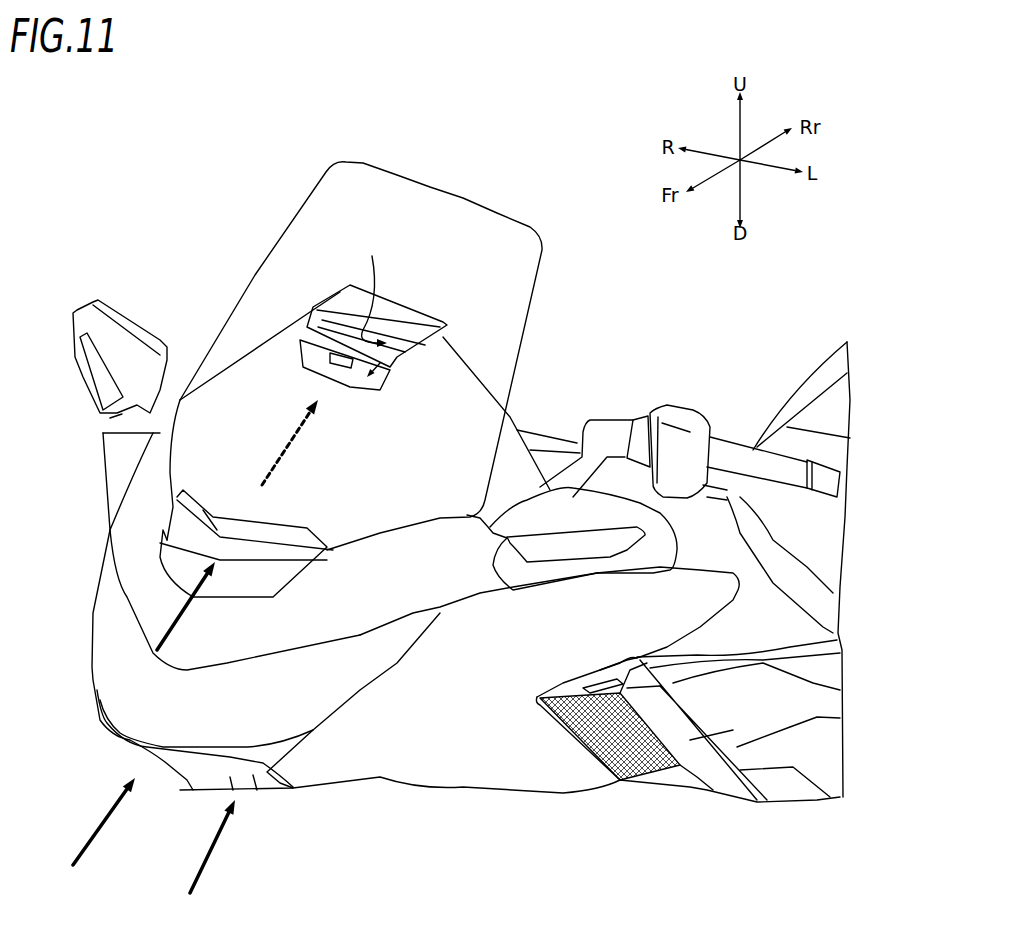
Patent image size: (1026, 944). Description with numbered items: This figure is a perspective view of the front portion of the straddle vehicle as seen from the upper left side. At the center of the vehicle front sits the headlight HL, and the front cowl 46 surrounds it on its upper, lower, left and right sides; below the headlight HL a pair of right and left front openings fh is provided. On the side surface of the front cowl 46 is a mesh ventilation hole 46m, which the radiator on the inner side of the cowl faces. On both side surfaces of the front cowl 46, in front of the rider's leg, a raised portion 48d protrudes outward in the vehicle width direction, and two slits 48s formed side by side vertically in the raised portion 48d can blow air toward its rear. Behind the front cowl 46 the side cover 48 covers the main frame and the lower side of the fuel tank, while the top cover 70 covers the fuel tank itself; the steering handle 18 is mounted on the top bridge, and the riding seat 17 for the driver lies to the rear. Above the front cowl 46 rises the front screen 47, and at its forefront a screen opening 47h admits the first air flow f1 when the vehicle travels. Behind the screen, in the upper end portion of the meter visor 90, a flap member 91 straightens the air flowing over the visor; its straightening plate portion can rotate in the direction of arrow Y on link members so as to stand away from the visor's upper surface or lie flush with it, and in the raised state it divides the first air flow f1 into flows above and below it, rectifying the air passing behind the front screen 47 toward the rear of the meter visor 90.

The front screen 47 is at (280, 263).
The screen opening 47h is at (160, 545).
The flap member 91 is at (417, 303).
The meter visor 90 is at (457, 390).
The top cover 70 is at (565, 435).
The steering handle 18 is at (737, 457).
The riding seat 17 is at (825, 408).
The headlight HL is at (127, 667).
The front cowl 46 is at (402, 757).
The mesh ventilation hole 46m is at (617, 780).
The side cover 48 is at (850, 663).
The slits 48s is at (840, 690).
The raised portion 48d is at (743, 733).
The front openings fh is at (262, 787).
The first air flow f1 is at (90, 830).
The arrow Y is at (373, 305).